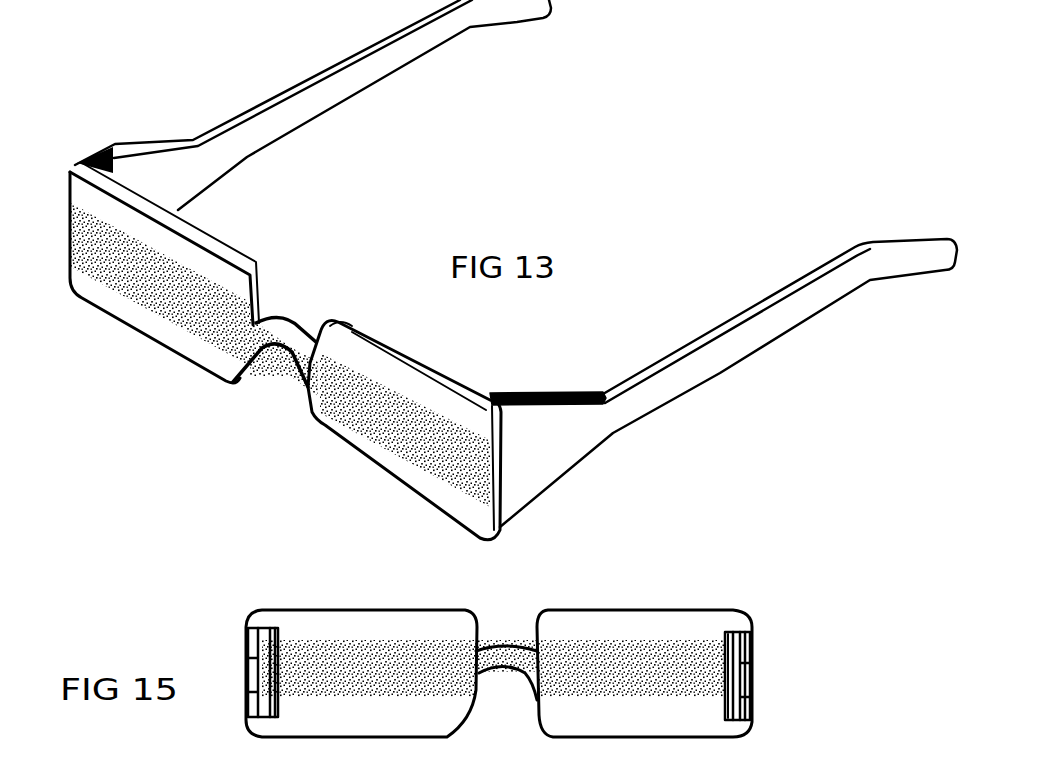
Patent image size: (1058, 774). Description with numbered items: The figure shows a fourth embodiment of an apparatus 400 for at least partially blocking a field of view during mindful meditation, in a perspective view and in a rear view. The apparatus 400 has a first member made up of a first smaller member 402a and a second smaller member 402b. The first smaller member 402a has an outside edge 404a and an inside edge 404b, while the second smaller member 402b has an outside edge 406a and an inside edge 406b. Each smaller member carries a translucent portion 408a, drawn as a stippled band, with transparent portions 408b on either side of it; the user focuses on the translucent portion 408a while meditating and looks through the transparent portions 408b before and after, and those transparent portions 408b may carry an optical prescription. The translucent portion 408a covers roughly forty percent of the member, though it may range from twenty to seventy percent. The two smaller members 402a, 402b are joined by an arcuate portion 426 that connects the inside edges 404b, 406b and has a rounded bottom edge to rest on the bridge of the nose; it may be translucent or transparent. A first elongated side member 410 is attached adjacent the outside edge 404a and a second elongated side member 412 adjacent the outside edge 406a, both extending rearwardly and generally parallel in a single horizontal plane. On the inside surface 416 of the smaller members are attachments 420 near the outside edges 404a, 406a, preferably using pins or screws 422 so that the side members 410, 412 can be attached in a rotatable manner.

In FIG. 13, the apparatus 400 is at (768, 266).
In FIG. 15, the apparatus 400 is at (806, 715).
In FIG. 13, the first smaller member 402a is at (230, 238).
In FIG. 13, the second smaller member 402b is at (425, 362).
In FIG. 13, the outside edge 404a is at (68, 187).
In FIG. 13, the inside edge 404b is at (260, 297).
In FIG. 13, the outside edge 406a is at (500, 533).
In FIG. 13, the inside edge 406b is at (335, 322).
In FIG. 13, the translucent portion 408a is at (157, 277).
In FIG. 15, the translucent portion 408a is at (413, 660).
In FIG. 13, the transparent portions 408b is at (432, 398).
In FIG. 13, the first elongated side member 410 is at (265, 100).
In FIG. 15, the first elongated side member 410 is at (752, 663).
In FIG. 13, the second elongated side member 412 is at (713, 328).
In FIG. 15, the second elongated side member 412 is at (250, 663).
In FIG. 15, the inside surface 416 is at (673, 633).
In FIG. 15, the attachments 420 is at (737, 628).
In FIG. 13, the pins or screws 422 is at (492, 392).
In FIG. 13, the arcuate portion 426 is at (283, 353).
In FIG. 15, the arcuate portion 426 is at (505, 673).